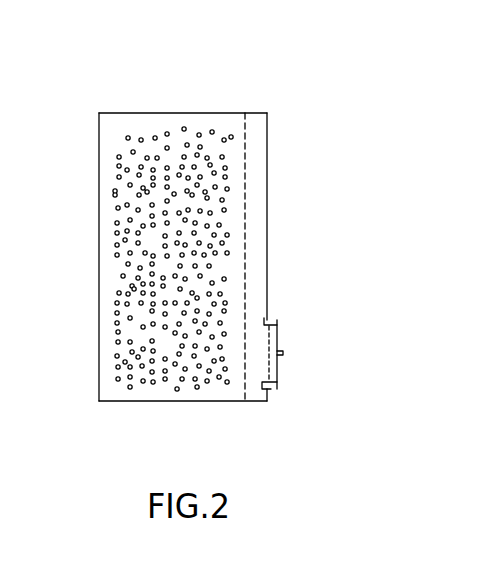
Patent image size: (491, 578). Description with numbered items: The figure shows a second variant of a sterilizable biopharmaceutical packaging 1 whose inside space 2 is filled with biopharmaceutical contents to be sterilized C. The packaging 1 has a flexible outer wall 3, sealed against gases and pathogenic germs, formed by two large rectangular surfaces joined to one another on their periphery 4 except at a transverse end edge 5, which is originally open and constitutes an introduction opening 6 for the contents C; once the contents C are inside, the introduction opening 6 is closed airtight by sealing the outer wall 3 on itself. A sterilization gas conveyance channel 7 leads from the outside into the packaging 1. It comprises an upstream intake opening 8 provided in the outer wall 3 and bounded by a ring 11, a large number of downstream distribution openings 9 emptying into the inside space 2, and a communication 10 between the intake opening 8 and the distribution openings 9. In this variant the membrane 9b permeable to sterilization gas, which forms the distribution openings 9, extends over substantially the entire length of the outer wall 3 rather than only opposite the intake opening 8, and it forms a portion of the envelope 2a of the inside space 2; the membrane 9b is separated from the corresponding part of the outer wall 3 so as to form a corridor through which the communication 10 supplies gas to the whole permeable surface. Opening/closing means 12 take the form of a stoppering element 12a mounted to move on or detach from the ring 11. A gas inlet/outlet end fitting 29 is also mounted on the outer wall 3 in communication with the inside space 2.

The sterilizable biopharmaceutical packaging 1 is at (198, 93).
The inside space 2 is at (192, 167).
The envelope 2a is at (135, 398).
The flexible outer wall 3 is at (98, 240).
The periphery 4 is at (107, 184).
The transverse end edge 5 is at (183, 75).
The introduction opening 6 is at (138, 113).
The sterilization gas conveyance channel 7 is at (262, 341).
The upstream intake opening 8 is at (278, 389).
The downstream distribution openings 9 is at (245, 292).
The membrane permeable to sterilization gas 9b is at (245, 362).
The communication 10 is at (259, 366).
The ring 11 is at (272, 322).
The opening/closing means 12 is at (355, 374).
The stoppering element 12a is at (278, 375).
The gas inlet/outlet end fitting 29 is at (283, 353).
The biopharmaceutical contents to be sterilized C is at (134, 289).